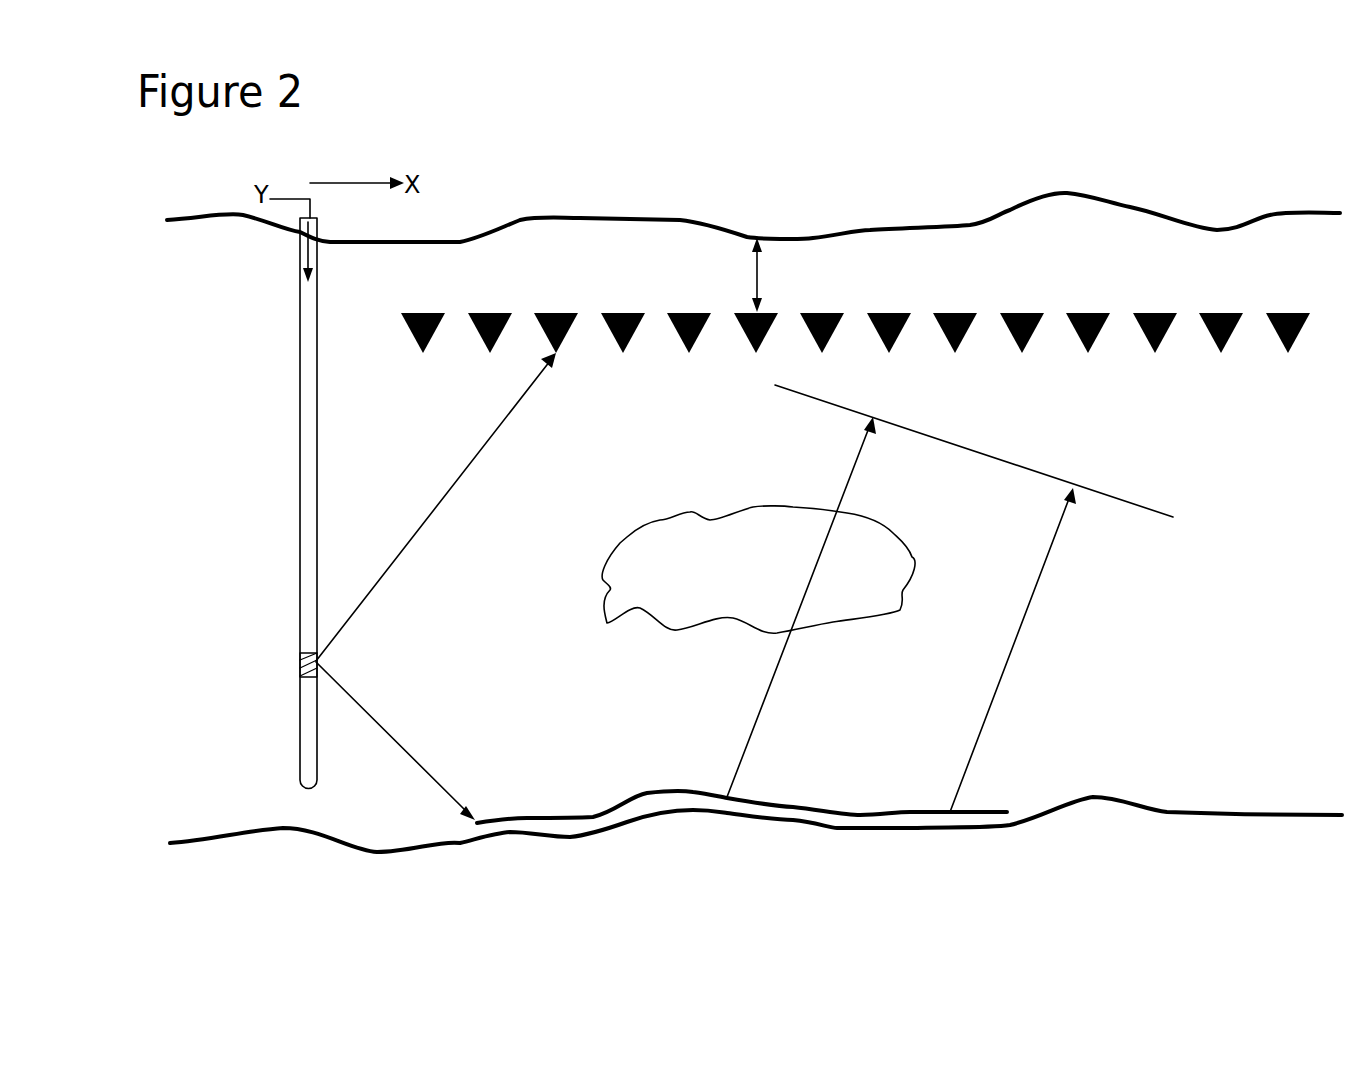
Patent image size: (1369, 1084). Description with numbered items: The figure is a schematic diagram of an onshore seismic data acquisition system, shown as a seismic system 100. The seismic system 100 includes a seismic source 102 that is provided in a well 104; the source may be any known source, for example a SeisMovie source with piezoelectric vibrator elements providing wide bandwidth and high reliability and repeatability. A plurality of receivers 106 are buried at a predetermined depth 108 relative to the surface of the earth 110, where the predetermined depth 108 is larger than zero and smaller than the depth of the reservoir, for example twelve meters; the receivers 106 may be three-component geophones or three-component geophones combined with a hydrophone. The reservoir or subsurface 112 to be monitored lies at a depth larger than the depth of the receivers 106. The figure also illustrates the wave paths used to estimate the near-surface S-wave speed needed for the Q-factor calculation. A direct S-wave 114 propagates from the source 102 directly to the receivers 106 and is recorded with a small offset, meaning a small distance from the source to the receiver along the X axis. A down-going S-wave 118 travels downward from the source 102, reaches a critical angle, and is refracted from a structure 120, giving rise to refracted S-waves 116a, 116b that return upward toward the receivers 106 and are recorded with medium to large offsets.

The seismic system 100 is at (944, 187).
The seismic source 102 is at (300, 665).
The well 104 is at (300, 318).
The receivers 106 is at (700, 335).
The predetermined depth 108 is at (760, 277).
The surface of the earth 110 is at (597, 215).
The reservoir or subsurface 112 is at (623, 552).
The direct S-wave 114 is at (430, 512).
The refracted S-wave 116a is at (767, 697).
The refracted S-wave 116b is at (1007, 655).
The down-going S-wave 118 is at (400, 745).
The structure 120 is at (837, 830).